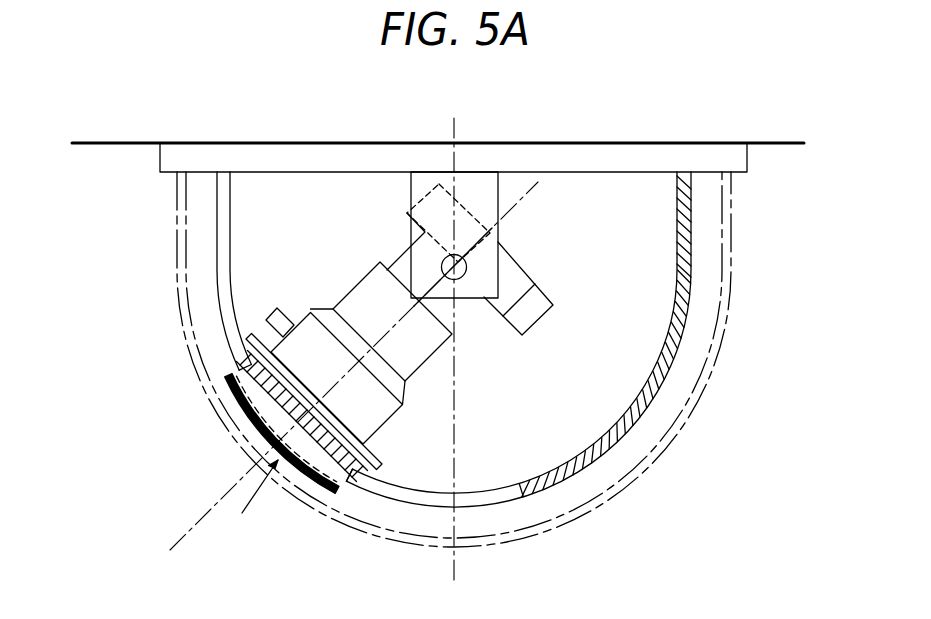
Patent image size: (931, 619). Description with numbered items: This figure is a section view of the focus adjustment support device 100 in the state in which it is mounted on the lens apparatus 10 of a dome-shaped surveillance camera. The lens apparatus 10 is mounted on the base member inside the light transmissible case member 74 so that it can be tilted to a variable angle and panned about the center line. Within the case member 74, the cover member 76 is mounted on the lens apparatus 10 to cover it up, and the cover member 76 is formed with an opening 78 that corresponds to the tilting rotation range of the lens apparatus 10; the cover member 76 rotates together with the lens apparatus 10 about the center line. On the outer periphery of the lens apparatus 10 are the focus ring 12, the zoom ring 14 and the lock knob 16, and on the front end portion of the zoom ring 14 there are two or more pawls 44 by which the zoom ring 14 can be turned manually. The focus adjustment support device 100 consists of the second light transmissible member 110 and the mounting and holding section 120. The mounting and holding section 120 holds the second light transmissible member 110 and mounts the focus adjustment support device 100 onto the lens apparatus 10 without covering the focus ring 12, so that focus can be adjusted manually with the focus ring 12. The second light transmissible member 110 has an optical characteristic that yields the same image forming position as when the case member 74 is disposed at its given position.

The lens apparatus 10 is at (313, 250).
The focus ring 12 is at (315, 472).
The zoom ring 14 is at (418, 370).
The lock knob 16 is at (272, 317).
The pawls 44 is at (252, 340).
The case member 74 is at (723, 283).
The cover member 76 is at (685, 232).
The opening 78 is at (351, 485).
The focus adjustment support device 100 is at (249, 506).
The second light transmissible member 110 is at (238, 406).
The mounting and holding section 120 is at (262, 428).